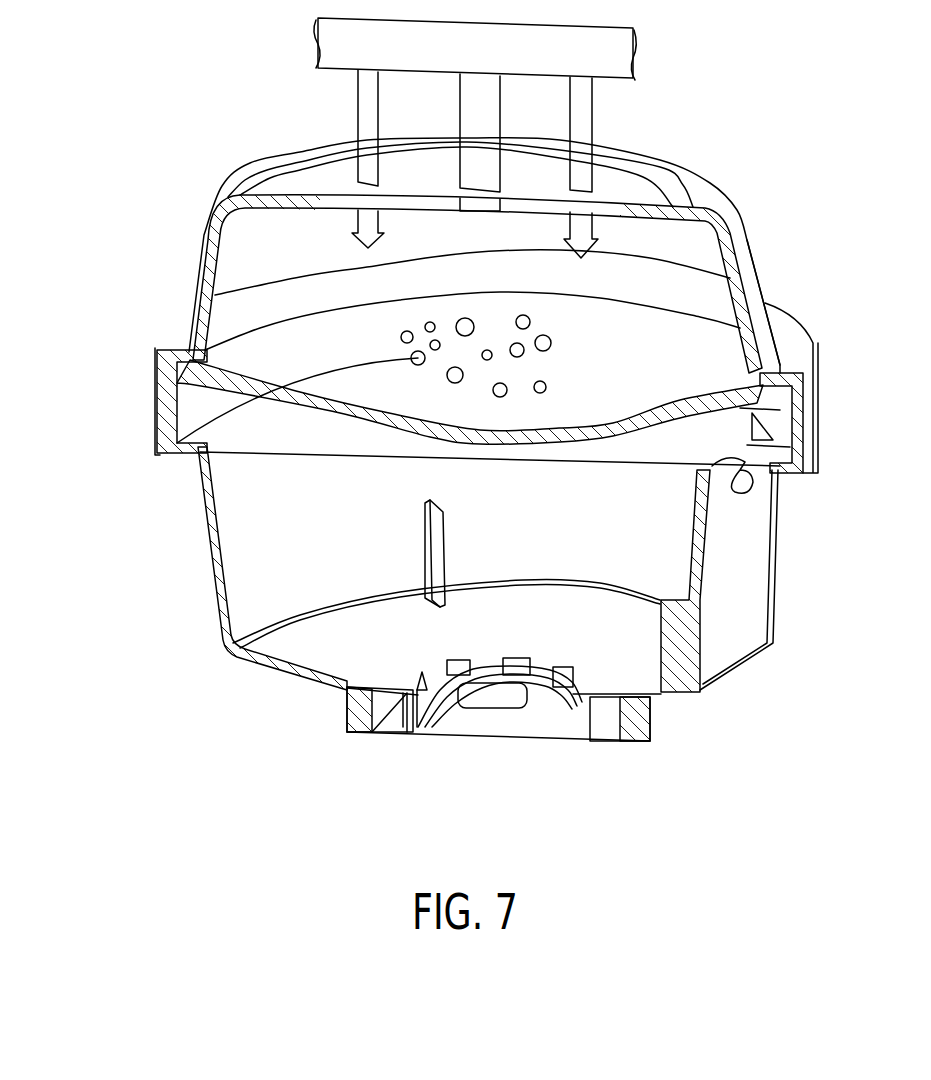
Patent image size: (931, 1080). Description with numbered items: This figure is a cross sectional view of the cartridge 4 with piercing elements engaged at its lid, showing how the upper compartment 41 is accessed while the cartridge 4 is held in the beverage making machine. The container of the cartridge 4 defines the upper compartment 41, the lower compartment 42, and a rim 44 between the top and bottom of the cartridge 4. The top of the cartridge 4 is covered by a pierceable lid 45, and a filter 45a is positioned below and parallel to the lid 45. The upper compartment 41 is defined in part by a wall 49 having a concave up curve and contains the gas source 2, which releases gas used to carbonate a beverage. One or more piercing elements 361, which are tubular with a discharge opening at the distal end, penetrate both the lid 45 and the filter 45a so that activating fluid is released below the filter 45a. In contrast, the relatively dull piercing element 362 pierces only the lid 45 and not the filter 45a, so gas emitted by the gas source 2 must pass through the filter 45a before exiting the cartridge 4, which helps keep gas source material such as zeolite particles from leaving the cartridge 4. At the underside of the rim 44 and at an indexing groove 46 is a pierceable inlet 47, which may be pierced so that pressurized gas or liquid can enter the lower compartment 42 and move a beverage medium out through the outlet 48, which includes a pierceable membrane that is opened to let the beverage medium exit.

The cartridge 4 is at (125, 196).
The piercing elements 361 is at (365, 135).
The piercing element 362 is at (475, 118).
The lid 45 is at (655, 183).
The filter 45a is at (337, 203).
The upper compartment 41 is at (743, 310).
The gas source 2 is at (177, 423).
The rim 44 is at (813, 415).
The wall 49 is at (320, 410).
The lower compartment 42 is at (213, 597).
The indexing groove 46 is at (753, 603).
The pierceable inlet 47 is at (755, 483).
The outlet 48 is at (503, 727).